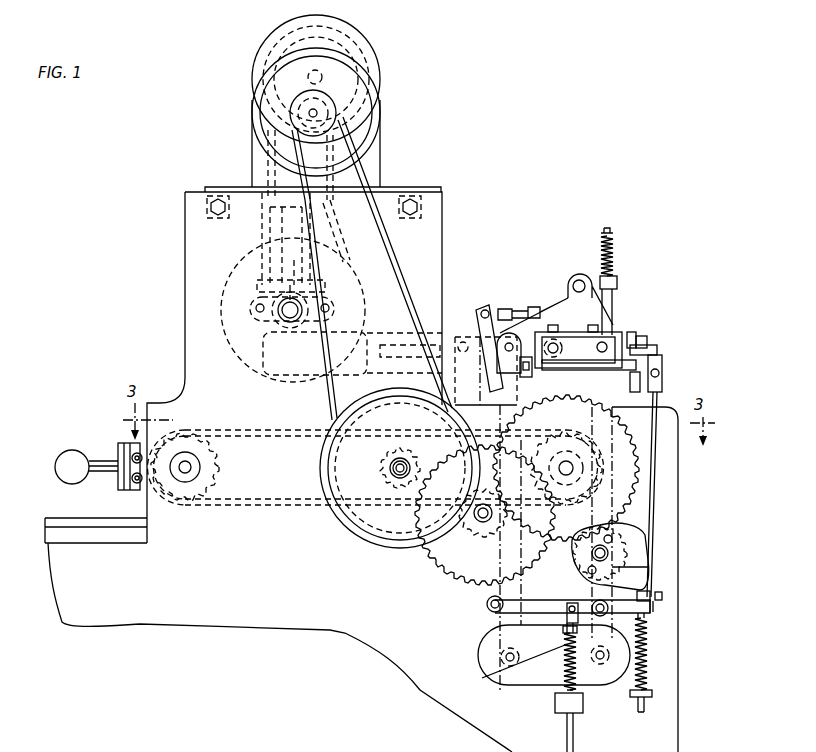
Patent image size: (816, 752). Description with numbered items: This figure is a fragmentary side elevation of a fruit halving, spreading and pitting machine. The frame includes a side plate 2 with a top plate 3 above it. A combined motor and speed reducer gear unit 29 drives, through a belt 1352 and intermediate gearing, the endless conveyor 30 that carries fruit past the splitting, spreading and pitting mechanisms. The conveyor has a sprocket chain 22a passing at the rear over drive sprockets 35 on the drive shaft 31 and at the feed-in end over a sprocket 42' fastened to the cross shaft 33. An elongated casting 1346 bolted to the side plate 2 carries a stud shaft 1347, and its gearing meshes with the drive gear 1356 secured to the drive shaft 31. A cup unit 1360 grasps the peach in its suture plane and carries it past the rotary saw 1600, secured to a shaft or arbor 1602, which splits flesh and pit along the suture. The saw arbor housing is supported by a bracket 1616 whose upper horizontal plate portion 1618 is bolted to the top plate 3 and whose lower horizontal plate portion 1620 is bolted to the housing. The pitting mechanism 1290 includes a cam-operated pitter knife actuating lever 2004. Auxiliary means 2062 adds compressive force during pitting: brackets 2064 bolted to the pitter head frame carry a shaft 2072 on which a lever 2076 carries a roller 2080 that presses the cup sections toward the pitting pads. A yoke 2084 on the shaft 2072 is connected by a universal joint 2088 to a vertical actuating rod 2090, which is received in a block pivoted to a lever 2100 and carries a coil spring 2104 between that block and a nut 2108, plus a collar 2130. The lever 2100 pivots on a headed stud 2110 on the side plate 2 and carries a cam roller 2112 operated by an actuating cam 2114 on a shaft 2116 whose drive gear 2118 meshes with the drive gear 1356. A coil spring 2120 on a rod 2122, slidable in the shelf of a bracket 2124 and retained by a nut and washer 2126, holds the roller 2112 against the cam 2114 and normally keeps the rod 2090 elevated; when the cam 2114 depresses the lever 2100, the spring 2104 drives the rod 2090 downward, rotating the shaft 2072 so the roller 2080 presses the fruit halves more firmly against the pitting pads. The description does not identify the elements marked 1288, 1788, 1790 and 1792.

The side plate 2 is at (427, 25).
The top plate 3 is at (388, 190).
The combined motor and speed reducer gear unit 29 is at (385, 75).
The belt 1352 is at (393, 250).
The bracket 1616 is at (266, 246).
The upper horizontal plate portion 1618 is at (331, 264).
The lower horizontal plate portion 1620 is at (255, 288).
The shaft or arbor 1602 is at (250, 316).
The rotary saw 1600 is at (222, 337).
The link chain 1288 is at (378, 318).
The pitting mechanism 1290 is at (551, 302).
The pitter knife actuating lever 2004 is at (477, 316).
The roller 2080 is at (496, 338).
The lever 2076 is at (524, 376).
The bracket 2064 is at (612, 320).
The auxiliary compressive means 2062 is at (655, 335).
The yoke 2084 is at (658, 350).
The universal joint 2088 is at (663, 373).
The shaft 2072 is at (635, 390).
The conveyor 30 is at (230, 430).
The sprocket chain 22a is at (270, 428).
The cross shaft 33 is at (192, 467).
The sprocket 42' is at (216, 467).
The cup unit 1360 is at (88, 452).
The elongated casting 1346 is at (351, 510).
The stud shaft 1347 is at (400, 458).
The drive shaft 31 is at (569, 461).
The drive gear 1356 is at (622, 474).
The drive sprocket 35 is at (595, 547).
The drive gear 2118 is at (628, 546).
The shaft 2116 is at (649, 567).
The actuating cam 2114 is at (573, 557).
The cam roller 2112 is at (594, 606).
The headed stud or bolt 2110 is at (489, 608).
The lever 2100 is at (654, 612).
The nut and washer 2126 is at (565, 631).
The collar 2130 is at (660, 596).
The vertical actuating rod 2090 is at (651, 517).
The coil spring 2104 is at (655, 640).
The nut 2108 is at (657, 697).
The oval bracket 1788 is at (509, 657).
The pin 1792 is at (511, 688).
The pin 1790 is at (600, 662).
The coil spring 2120 is at (488, 680).
The bracket 2124 is at (565, 696).
The rod 2122 is at (568, 717).